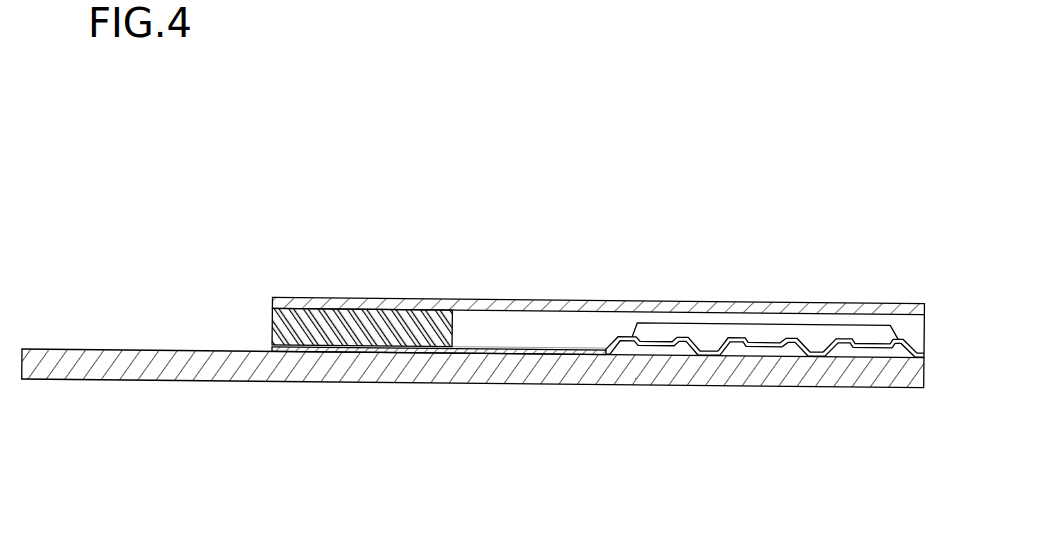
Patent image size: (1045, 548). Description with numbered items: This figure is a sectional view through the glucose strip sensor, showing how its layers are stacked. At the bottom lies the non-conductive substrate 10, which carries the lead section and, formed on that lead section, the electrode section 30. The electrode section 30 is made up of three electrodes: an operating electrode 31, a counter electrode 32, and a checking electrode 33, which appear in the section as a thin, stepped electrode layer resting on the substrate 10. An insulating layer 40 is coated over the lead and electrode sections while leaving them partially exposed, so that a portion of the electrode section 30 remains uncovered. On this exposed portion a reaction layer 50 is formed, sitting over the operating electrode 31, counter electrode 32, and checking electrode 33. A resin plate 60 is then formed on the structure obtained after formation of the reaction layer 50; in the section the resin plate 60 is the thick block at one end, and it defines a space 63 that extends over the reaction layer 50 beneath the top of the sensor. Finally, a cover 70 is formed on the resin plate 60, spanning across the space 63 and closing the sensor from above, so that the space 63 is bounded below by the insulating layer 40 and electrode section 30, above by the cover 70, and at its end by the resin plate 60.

The non-conductive substrate 10 is at (392, 372).
The electrode section 30 is at (764, 423).
The operating electrode 31 is at (772, 350).
The counter electrode 32 is at (667, 350).
The checking electrode 33 is at (860, 350).
The insulating layer 40 is at (579, 352).
The reaction layer 50 is at (816, 337).
The resin plate 60 is at (337, 323).
The space 63 is at (491, 327).
The cover 70 is at (572, 300).